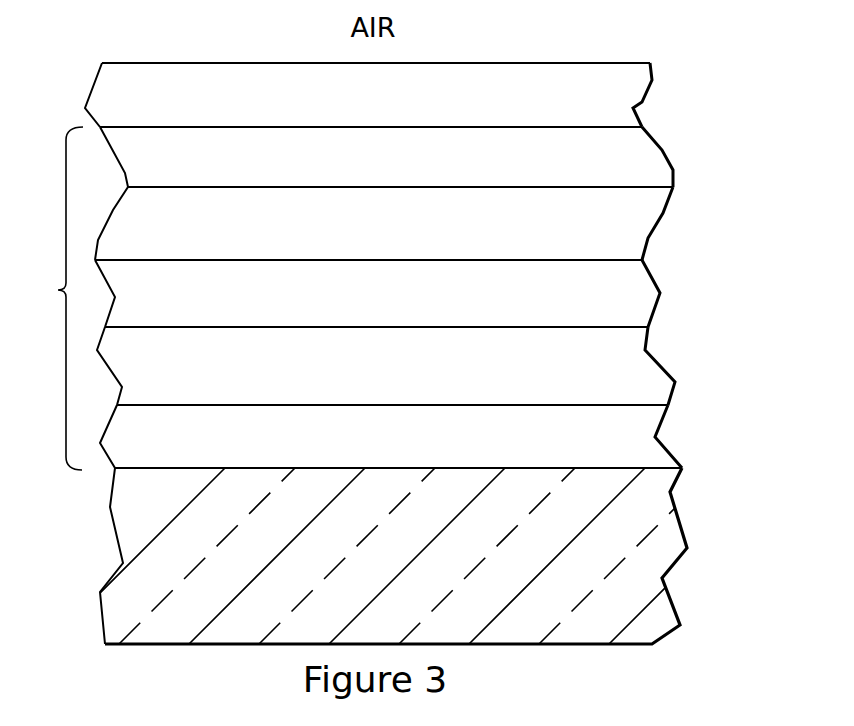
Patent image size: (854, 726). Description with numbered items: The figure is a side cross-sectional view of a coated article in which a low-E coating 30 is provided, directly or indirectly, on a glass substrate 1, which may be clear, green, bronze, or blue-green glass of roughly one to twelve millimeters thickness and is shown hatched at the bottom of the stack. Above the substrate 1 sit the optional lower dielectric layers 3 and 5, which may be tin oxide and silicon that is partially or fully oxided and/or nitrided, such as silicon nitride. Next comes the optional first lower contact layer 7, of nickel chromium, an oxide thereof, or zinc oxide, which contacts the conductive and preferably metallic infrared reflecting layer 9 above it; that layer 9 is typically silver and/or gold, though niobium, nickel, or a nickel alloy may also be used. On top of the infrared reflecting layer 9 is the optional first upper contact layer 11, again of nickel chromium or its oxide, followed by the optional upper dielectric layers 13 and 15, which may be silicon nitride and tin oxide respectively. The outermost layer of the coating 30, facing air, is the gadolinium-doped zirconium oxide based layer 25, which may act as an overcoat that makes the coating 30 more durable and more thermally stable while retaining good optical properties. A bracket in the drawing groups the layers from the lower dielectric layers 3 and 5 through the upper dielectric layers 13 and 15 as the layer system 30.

The substrate 1 is at (652, 553).
The optional dielectric layer 3 is at (420, 436).
The optional dielectric layer 5 is at (637, 443).
The first lower contact layer 7 is at (630, 368).
The infrared (IR) reflecting layer 9 is at (630, 293).
The first upper contact layer 11 is at (638, 220).
The optional dielectric layer 13 is at (437, 157).
The optional dielectric layer 15 is at (642, 155).
The Gd-doped zirconium oxide based layer 25 is at (623, 89).
The coating 30 is at (402, 298).